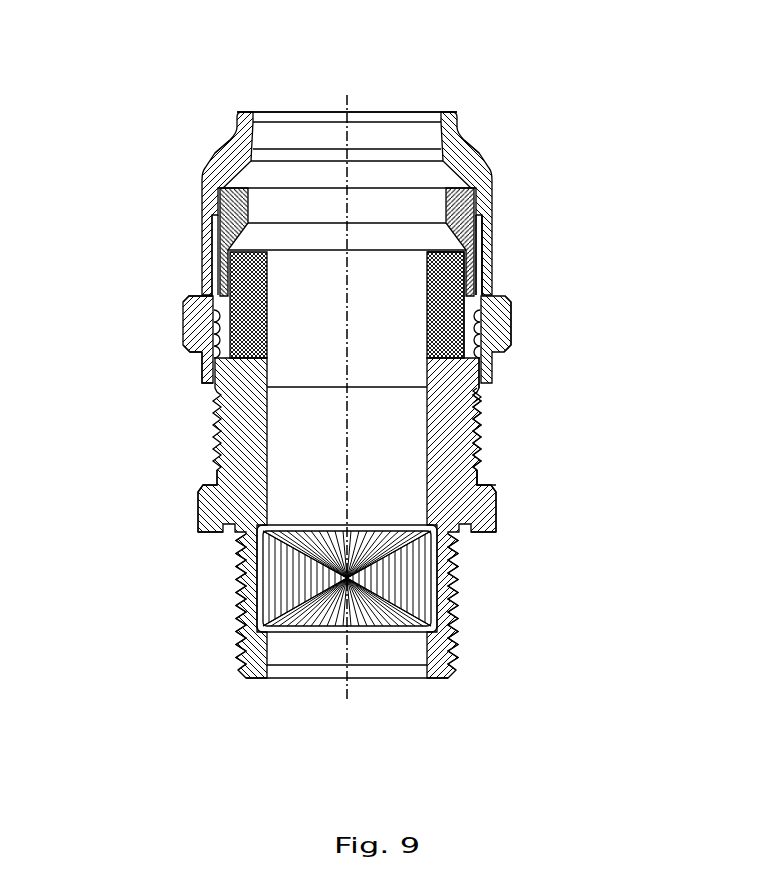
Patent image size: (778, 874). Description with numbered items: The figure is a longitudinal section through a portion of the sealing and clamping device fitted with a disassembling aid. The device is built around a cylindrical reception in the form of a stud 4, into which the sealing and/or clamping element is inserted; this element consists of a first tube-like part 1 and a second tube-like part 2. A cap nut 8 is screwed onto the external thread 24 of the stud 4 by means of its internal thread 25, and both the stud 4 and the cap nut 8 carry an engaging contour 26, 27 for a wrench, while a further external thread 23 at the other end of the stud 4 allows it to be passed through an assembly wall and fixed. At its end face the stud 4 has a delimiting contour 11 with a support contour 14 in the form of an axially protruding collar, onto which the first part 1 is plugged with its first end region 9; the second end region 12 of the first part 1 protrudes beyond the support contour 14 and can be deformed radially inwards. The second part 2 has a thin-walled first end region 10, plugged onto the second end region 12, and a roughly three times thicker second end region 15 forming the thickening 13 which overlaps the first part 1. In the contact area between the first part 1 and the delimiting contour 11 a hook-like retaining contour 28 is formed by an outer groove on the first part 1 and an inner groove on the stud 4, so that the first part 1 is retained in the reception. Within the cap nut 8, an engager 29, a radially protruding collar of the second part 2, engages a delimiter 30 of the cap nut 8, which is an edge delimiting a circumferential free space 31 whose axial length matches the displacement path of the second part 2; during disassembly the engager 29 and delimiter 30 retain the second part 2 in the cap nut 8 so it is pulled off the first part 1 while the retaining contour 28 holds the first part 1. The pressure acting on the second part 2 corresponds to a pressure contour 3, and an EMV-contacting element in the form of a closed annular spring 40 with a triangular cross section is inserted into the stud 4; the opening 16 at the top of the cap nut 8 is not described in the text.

The first tube-like part 1 is at (460, 290).
The second tube-like part 2 is at (222, 243).
The pressure contour 3 is at (217, 148).
The stud 4 is at (506, 572).
The cap nut 8 is at (203, 162).
The first end region of the first part 9 is at (512, 342).
The thin-walled first end region of the second part 10 is at (210, 285).
The delimiting contour 11 is at (477, 410).
The second end region of the first part 12 is at (463, 272).
The thickening 13 is at (493, 192).
The support contour 14 is at (490, 373).
The thick-walled second end region of the second part 15 is at (458, 208).
The opening 16 is at (288, 113).
The external thread 23 is at (237, 588).
The external thread of the stud 24 is at (477, 438).
The internal thread 25 is at (203, 355).
The engaging contour of the stud 26 is at (197, 502).
The engaging contour of the cap nut 27 is at (182, 337).
The hook-like retaining contour 28 is at (477, 392).
The engager 29 is at (187, 297).
The delimiter 30 is at (182, 317).
The free space 31 is at (212, 258).
The closed annular spring 40 is at (262, 603).